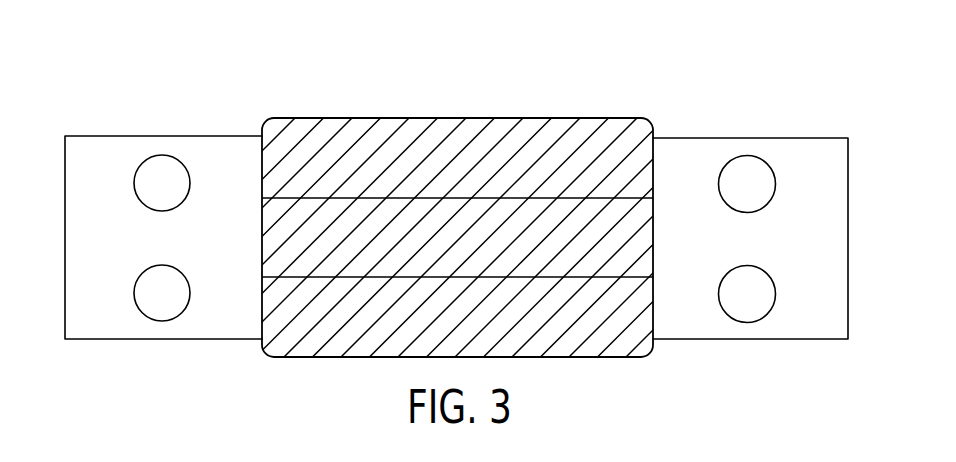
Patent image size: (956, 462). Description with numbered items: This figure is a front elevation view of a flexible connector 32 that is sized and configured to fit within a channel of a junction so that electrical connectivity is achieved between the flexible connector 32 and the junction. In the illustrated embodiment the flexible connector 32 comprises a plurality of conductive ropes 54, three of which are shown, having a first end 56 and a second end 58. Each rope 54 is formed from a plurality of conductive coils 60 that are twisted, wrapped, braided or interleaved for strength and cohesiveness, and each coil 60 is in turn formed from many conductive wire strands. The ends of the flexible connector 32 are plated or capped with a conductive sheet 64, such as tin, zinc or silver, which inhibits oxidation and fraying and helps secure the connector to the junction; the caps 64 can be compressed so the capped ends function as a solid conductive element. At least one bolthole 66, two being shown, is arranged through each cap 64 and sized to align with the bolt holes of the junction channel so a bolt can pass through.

The flexible connector 32 is at (668, 60).
The conductive rope 54 is at (565, 118).
The first end 56 is at (700, 140).
The second end 58 is at (223, 152).
The conductive coil 60 is at (445, 135).
The conductive sheet 64 is at (100, 152).
The bolthole 66 is at (753, 170).